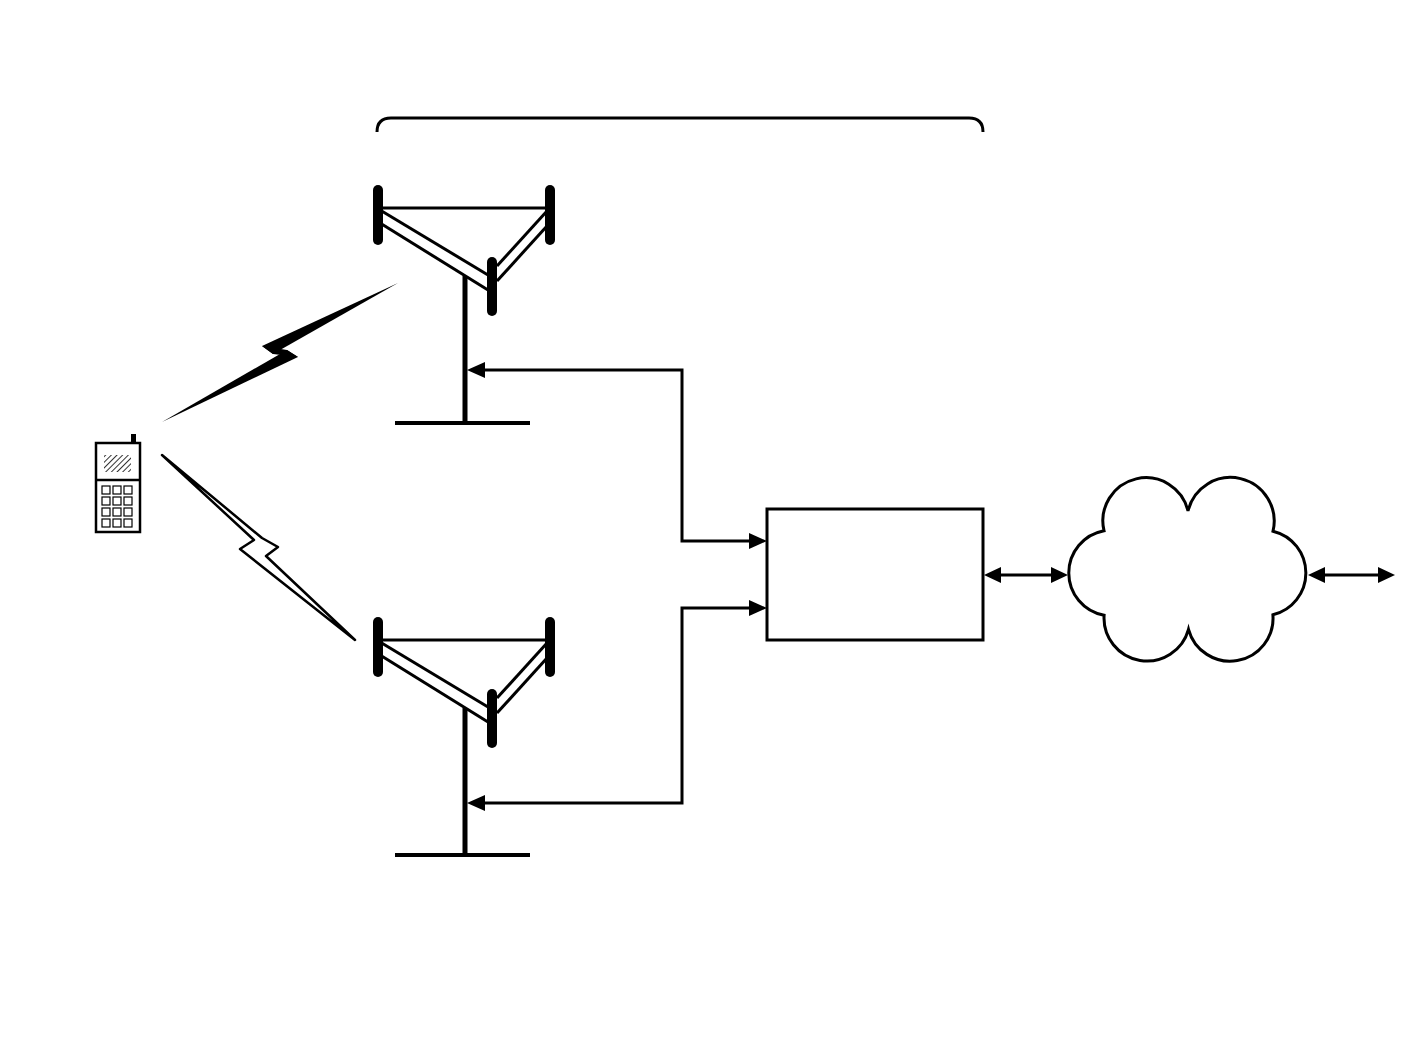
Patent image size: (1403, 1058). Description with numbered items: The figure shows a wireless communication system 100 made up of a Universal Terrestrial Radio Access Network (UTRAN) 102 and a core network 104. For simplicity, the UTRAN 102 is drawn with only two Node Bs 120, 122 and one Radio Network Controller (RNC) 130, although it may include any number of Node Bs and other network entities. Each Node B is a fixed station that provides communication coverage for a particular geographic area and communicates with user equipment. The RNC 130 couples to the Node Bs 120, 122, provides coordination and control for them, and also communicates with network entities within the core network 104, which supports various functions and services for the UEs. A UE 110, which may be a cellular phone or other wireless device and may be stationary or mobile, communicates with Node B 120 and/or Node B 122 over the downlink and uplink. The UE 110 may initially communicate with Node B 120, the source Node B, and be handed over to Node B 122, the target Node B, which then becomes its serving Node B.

The wireless communication system 100 is at (1258, 107).
The Universal Terrestrial Radio Access Network (UTRAN) 102 is at (674, 488).
The core network 104 is at (1178, 497).
The UE 110 is at (114, 442).
The Node B 120 is at (456, 206).
The Node B 122 is at (456, 638).
The Radio Network Controller (RNC) 130 is at (868, 508).